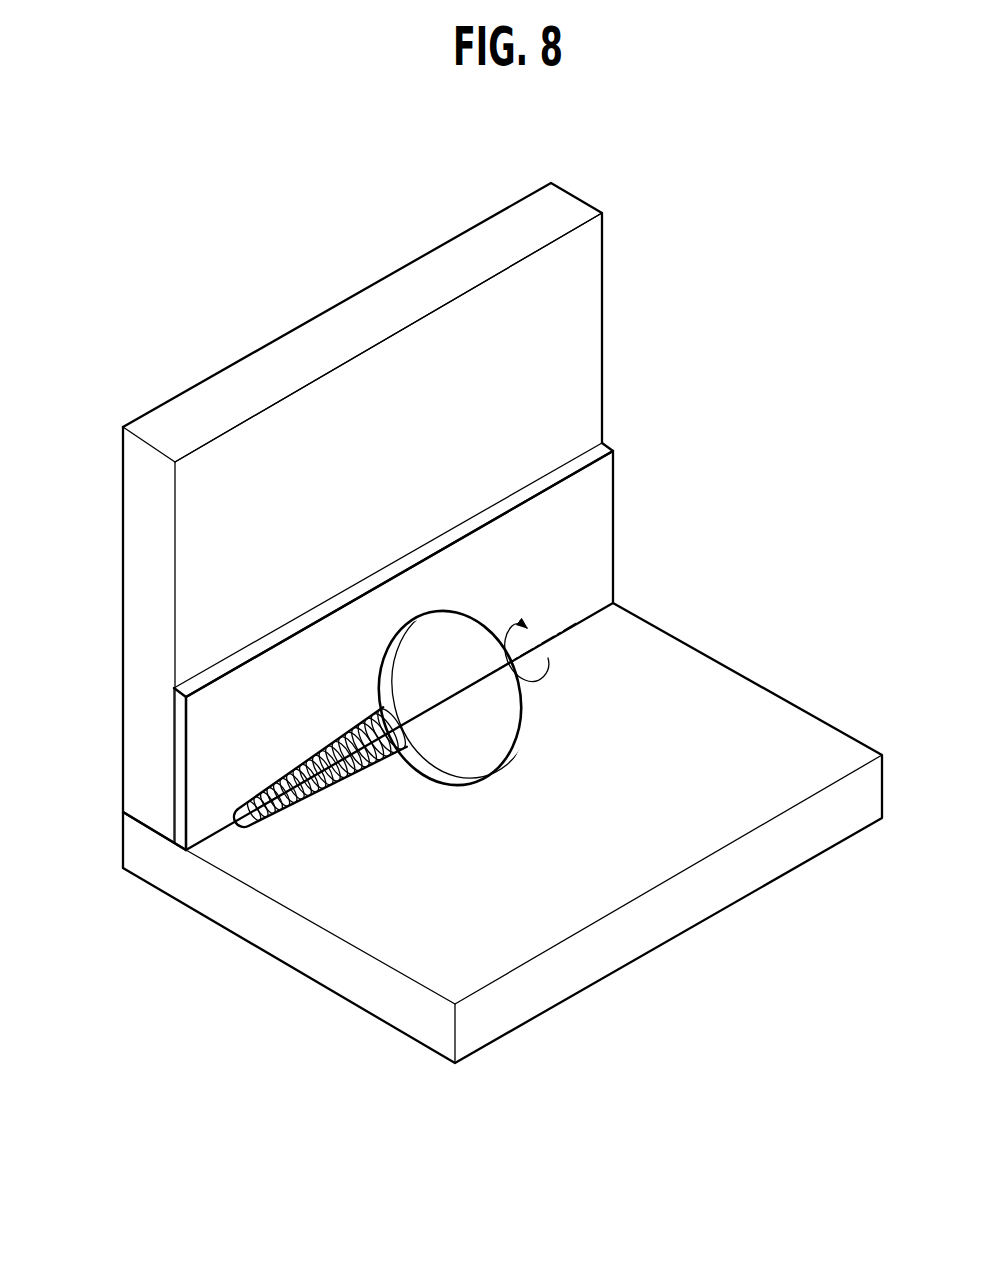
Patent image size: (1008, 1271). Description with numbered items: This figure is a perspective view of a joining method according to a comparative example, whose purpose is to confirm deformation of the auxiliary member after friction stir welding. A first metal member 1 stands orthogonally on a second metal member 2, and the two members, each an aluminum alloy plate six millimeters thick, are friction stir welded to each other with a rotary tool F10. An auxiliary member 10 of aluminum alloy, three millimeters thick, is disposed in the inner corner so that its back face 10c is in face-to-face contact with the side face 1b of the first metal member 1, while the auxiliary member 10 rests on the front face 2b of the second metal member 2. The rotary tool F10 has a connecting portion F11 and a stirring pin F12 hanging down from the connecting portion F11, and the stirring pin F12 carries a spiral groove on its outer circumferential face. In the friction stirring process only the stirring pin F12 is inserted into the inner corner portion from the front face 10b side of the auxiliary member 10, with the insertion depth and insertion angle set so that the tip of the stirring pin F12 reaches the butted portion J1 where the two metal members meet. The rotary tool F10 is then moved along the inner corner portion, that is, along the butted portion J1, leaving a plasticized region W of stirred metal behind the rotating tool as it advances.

The first metal member 1 is at (334, 525).
The side face 1b is at (235, 518).
The auxiliary member 10 is at (444, 601).
The front face 10b is at (587, 567).
The back face 10c is at (573, 455).
The second metal member 2 is at (460, 844).
The front face 2b is at (393, 921).
The butted portion J1 is at (120, 811).
The plasticized region W is at (275, 814).
The rotary tool F10 is at (423, 736).
The connecting portion F11 is at (447, 766).
The stirring pin F12 is at (360, 768).